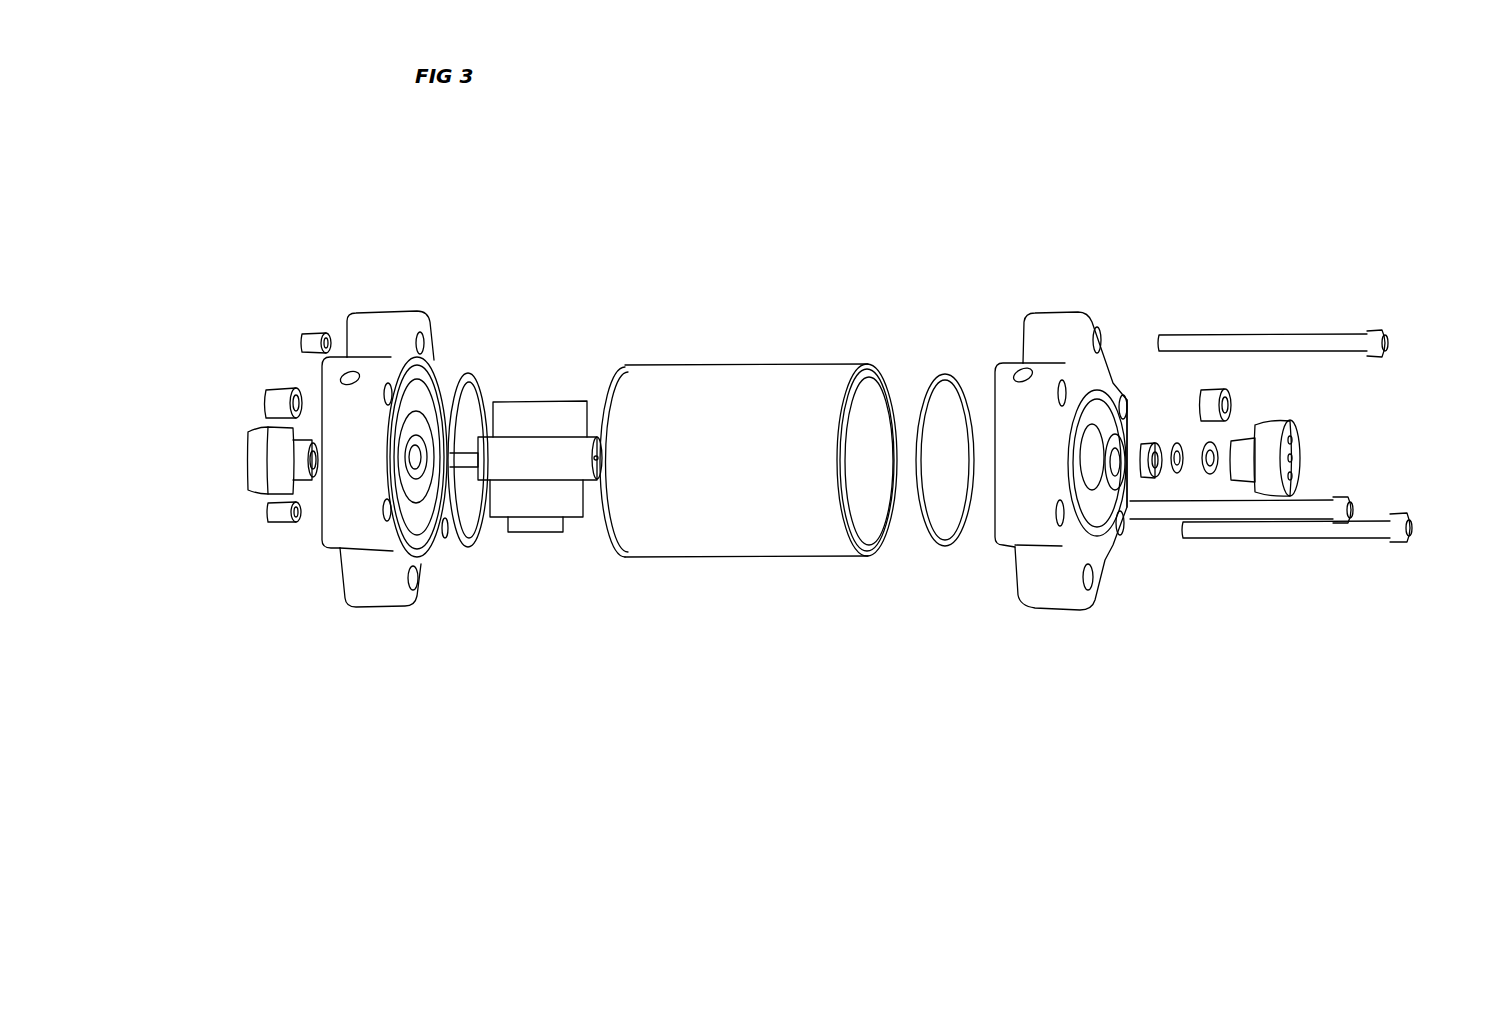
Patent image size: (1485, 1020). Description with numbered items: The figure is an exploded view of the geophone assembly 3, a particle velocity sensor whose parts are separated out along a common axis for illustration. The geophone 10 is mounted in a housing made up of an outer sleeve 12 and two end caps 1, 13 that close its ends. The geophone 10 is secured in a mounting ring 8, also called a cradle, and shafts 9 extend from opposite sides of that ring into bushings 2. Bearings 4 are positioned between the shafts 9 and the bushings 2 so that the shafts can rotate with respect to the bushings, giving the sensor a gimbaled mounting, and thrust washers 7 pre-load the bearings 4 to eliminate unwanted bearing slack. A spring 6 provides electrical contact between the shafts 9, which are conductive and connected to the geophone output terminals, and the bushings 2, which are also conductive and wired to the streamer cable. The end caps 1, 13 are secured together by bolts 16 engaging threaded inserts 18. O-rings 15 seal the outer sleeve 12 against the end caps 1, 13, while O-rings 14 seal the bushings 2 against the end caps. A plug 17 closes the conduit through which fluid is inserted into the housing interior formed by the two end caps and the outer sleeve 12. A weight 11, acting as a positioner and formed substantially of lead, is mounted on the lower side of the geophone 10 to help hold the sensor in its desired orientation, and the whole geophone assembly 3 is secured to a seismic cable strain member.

The end cap 1 is at (1075, 311).
The bushing 2 is at (249, 446).
The geophone assembly 3 is at (735, 236).
The bearing 4 is at (1153, 478).
The spring 6 is at (1212, 473).
The thrust washer 7 is at (1180, 474).
The mounting ring 8 is at (576, 437).
The shaft 9 is at (491, 404).
The geophone 10 is at (547, 400).
The weight 11 is at (545, 532).
The outer sleeve 12 is at (738, 561).
The end cap 13 is at (405, 608).
The O-ring 14 is at (1128, 505).
The O-ring 15 is at (944, 542).
The bolt 16 is at (1234, 333).
The plug 17 is at (268, 390).
The threaded insert 18 is at (301, 331).